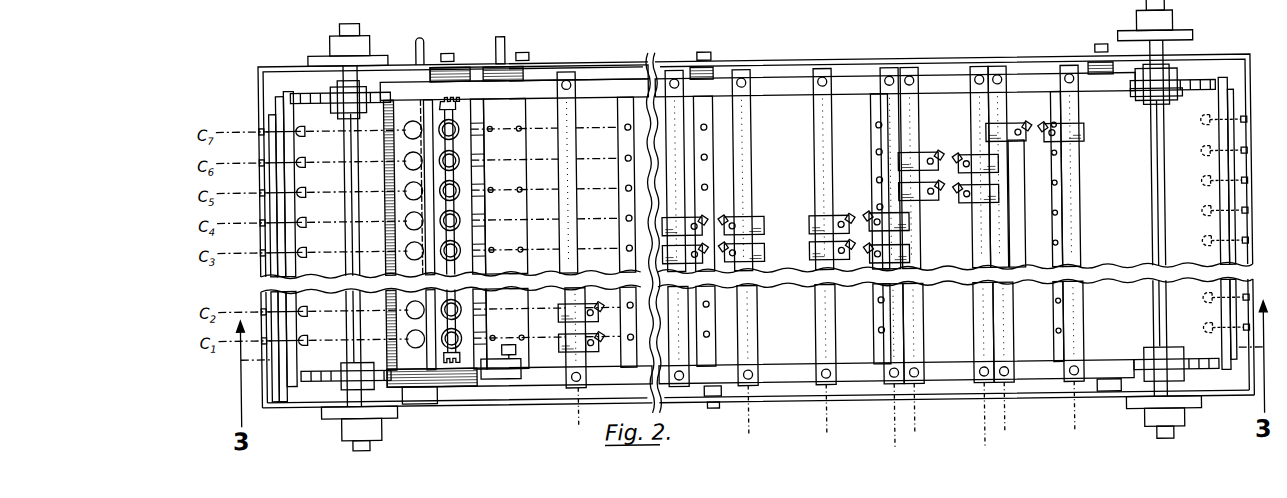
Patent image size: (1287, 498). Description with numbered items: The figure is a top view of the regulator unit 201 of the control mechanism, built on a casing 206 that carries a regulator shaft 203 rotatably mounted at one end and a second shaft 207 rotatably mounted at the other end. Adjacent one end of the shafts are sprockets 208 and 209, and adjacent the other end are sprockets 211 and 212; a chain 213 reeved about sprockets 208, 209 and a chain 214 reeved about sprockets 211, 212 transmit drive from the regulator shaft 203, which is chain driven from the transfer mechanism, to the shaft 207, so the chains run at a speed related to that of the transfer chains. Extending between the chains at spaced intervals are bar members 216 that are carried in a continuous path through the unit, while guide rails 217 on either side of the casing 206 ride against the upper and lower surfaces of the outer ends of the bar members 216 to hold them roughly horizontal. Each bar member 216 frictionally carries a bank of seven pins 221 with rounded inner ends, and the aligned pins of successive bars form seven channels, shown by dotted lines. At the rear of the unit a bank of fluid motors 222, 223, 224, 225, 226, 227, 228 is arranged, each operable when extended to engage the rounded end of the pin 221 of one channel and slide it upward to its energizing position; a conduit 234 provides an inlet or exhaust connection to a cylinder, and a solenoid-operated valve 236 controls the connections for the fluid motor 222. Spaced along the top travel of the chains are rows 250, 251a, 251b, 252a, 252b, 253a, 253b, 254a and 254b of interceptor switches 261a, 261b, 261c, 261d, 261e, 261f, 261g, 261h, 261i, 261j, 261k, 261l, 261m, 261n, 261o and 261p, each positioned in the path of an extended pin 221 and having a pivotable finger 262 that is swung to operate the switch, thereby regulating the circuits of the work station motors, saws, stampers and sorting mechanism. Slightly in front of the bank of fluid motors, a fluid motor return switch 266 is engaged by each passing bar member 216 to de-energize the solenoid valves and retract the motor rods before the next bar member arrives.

The regulator unit 201 is at (258, 88).
The regulator shaft 203 is at (1152, 204).
The casing 206 is at (267, 417).
The second shaft 207 is at (363, 27).
The sprocket 208 is at (389, 235).
The sprocket 209 is at (1143, 111).
The sprocket 211 is at (377, 370).
The sprocket 212 is at (1150, 364).
The chain 213 is at (300, 94).
The chain 214 is at (314, 385).
The bar member 216 is at (292, 322).
The guide rail 217 is at (536, 83).
The pin 221 is at (302, 223).
The fluid motor 222 is at (456, 339).
The fluid motor 223 is at (456, 310).
The fluid motor 224 is at (455, 257).
The fluid motor 225 is at (455, 227).
The fluid motor 226 is at (455, 197).
The fluid motor 227 is at (455, 167).
The fluid motor 228 is at (455, 136).
The conduit 234 is at (423, 44).
The solenoid-operated valve 236 is at (408, 184).
The row of interceptor switches 250 is at (571, 412).
The row of interceptor switches 251a is at (680, 422).
The row of interceptor switches 251b is at (748, 418).
The row of interceptor switches 252a is at (827, 420).
The row of interceptor switches 252b is at (893, 433).
The row of interceptor switches 253a is at (912, 421).
The row of interceptor switches 253b is at (982, 439).
The row of interceptor switches 254a is at (1003, 423).
The row of interceptor switches 254b is at (1073, 421).
The interceptor switch 261a is at (563, 357).
The interceptor switch 261b is at (572, 308).
The interceptor switch 261c is at (677, 258).
The interceptor switch 261d is at (680, 226).
The interceptor switch 261e is at (783, 203).
The interceptor switch 261f is at (740, 258).
The interceptor switch 261g is at (808, 258).
The interceptor switch 261h is at (890, 259).
The interceptor switch 261i is at (813, 218).
The interceptor switch 261j is at (903, 233).
The interceptor switch 261k is at (907, 203).
The interceptor switch 261l is at (968, 208).
The interceptor switch 261m is at (913, 175).
The interceptor switch 261n is at (1000, 168).
The interceptor switch 261o is at (987, 140).
The interceptor switch 261p is at (1083, 137).
The pivotable finger 262 is at (593, 350).
The fluid motor return switch 266 is at (492, 372).